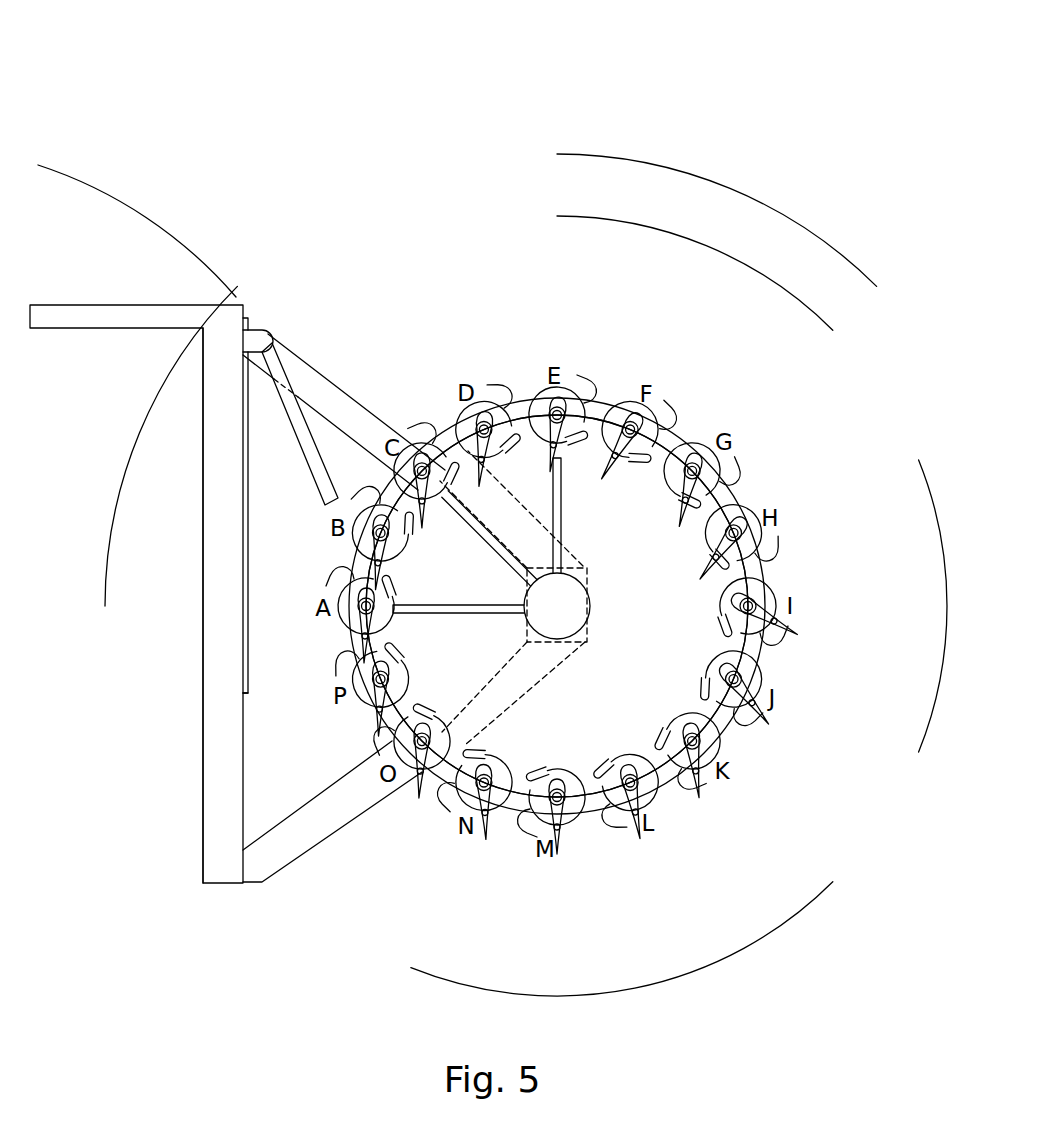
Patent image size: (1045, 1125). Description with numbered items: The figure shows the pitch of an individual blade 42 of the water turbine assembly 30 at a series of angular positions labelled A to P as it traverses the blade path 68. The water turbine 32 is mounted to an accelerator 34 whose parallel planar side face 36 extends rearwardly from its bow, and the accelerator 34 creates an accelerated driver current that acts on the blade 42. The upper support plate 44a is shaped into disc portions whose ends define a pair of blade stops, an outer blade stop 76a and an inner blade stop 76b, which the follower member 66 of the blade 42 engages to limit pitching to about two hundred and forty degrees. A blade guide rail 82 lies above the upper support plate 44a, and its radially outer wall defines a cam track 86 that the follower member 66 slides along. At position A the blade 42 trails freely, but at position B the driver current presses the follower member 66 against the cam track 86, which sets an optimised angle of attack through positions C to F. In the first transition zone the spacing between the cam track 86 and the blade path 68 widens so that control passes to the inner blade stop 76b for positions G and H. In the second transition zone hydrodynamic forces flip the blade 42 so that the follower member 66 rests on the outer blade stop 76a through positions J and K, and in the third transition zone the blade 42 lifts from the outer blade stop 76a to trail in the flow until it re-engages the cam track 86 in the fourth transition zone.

The water turbine assembly 30 is at (536, 99).
The water turbine 32 is at (469, 313).
The accelerator 34 is at (178, 196).
The side face 36 is at (245, 717).
The blade 42 is at (640, 807).
The upper support plate 44a is at (620, 680).
The follower member 66 is at (485, 460).
The blade path 68 is at (721, 723).
The outer blade stop 76a is at (767, 540).
The inner blade stop 76b is at (606, 765).
The blade guide rail 82 is at (618, 478).
The cam track 86 is at (572, 393).